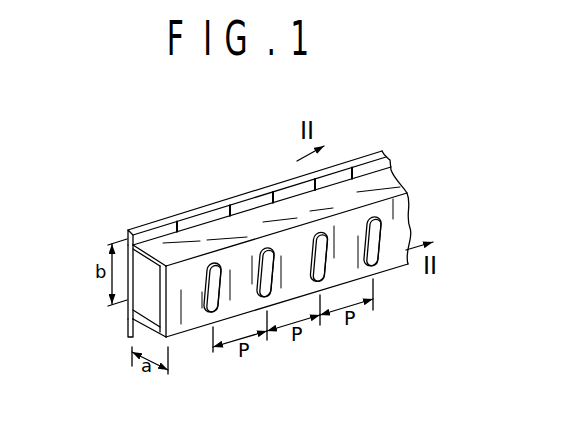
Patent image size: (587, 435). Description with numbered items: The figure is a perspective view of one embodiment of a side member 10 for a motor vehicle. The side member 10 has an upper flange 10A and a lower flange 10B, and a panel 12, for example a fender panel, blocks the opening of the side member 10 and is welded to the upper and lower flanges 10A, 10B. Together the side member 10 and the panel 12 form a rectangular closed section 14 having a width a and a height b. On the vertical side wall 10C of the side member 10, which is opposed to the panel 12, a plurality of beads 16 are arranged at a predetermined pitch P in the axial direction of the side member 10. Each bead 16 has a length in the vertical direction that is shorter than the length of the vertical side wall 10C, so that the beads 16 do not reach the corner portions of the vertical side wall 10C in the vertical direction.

The side member 10 is at (412, 162).
The upper flange 10A is at (361, 166).
The lower flange 10B is at (140, 338).
The vertical side wall 10C is at (185, 322).
The panel 12 is at (127, 240).
The rectangular closed section 14 is at (128, 306).
The beads 16 is at (380, 229).